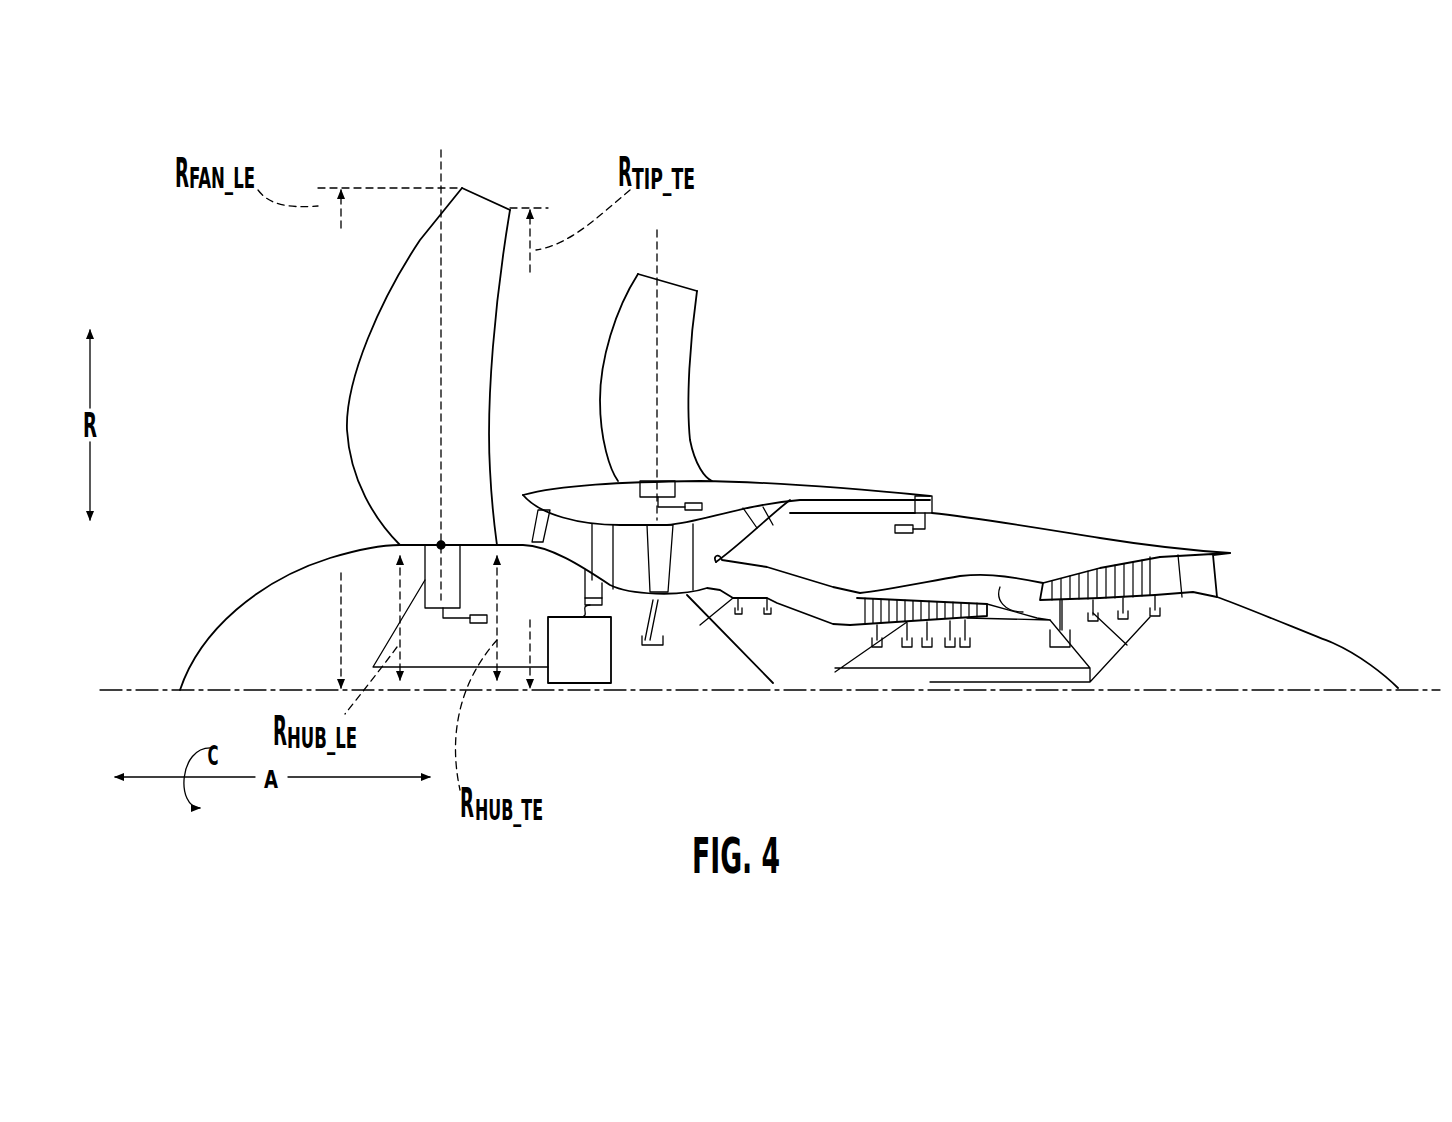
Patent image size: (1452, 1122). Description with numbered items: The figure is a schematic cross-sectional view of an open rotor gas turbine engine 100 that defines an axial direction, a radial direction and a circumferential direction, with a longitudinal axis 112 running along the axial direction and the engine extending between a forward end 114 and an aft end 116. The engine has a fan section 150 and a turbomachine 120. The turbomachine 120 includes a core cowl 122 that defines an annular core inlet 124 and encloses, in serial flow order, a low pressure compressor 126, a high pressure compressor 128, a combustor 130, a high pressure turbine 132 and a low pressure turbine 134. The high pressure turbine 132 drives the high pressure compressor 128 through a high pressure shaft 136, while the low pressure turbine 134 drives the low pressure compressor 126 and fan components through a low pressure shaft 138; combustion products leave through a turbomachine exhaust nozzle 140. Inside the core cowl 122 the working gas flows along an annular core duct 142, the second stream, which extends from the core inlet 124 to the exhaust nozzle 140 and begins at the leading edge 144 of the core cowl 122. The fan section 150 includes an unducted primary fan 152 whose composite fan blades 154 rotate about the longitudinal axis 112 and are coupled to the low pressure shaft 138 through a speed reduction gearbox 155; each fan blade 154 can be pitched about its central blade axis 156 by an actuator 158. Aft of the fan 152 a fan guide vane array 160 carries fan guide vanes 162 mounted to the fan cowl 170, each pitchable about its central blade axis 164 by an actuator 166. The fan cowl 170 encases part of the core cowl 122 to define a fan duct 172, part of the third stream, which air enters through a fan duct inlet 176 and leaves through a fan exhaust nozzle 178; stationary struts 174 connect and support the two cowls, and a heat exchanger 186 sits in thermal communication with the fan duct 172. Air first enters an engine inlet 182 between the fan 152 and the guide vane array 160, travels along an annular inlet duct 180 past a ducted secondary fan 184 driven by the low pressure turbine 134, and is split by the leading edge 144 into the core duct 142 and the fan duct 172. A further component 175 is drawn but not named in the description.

The gas turbine engine 100 is at (1005, 312).
The longitudinal axis 112 is at (1425, 692).
The forward end 114 is at (178, 688).
The aft end 116 is at (1378, 668).
The turbomachine 120 is at (958, 578).
The core cowl 122 is at (940, 510).
The core inlet 124 is at (705, 586).
The low pressure compressor 126 is at (752, 622).
The high pressure compressor 128 is at (938, 642).
The combustor 130 is at (1000, 622).
The high pressure turbine 132 is at (1062, 572).
The low pressure turbine 134 is at (1134, 552).
The high pressure shaft 136 is at (1070, 668).
The low pressure shaft 138 is at (387, 640).
The turbomachine exhaust nozzle 140 is at (1197, 575).
The core duct 142 is at (1018, 585).
The leading edge of the core cowl 144 is at (716, 580).
The fan section 150 is at (337, 341).
The fan 152 is at (393, 341).
The fan blade 154 is at (393, 297).
The speed reduction gearbox 155 is at (578, 660).
The central blade axis 156 is at (441, 185).
The actuator 158 is at (477, 616).
The fan guide vane array 160 is at (654, 303).
The fan guide vane 162 is at (672, 365).
The central blade axis 164 is at (660, 250).
The actuator 166 is at (713, 494).
The fan cowl 170 is at (753, 493).
The fan duct 172 is at (788, 498).
The stationary strut 174 is at (817, 547).
The inlet guide vane 175 is at (545, 507).
The fan duct inlet 176 is at (706, 545).
The fan exhaust nozzle 178 is at (929, 494).
The inlet duct 180 is at (627, 592).
The engine inlet 182 is at (519, 512).
The ducted fan 184 is at (600, 520).
The heat exchanger 186 is at (777, 604).